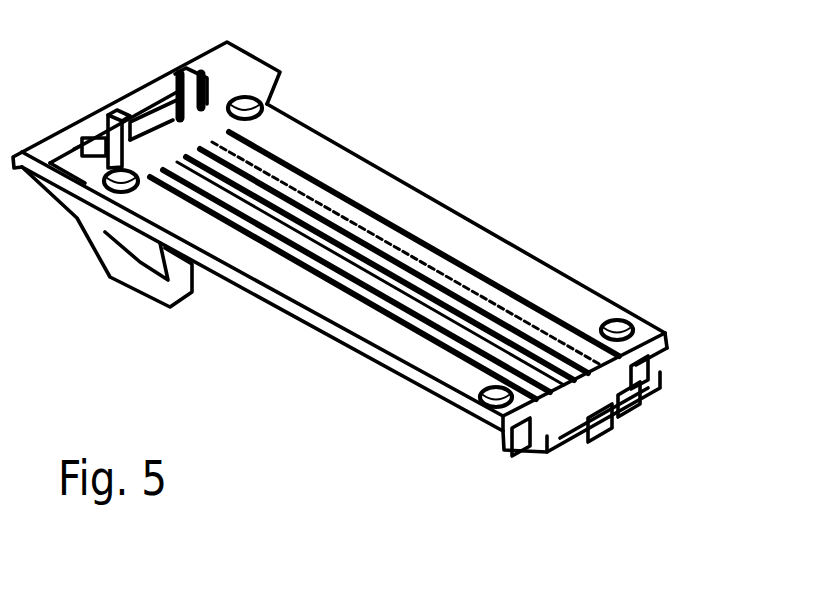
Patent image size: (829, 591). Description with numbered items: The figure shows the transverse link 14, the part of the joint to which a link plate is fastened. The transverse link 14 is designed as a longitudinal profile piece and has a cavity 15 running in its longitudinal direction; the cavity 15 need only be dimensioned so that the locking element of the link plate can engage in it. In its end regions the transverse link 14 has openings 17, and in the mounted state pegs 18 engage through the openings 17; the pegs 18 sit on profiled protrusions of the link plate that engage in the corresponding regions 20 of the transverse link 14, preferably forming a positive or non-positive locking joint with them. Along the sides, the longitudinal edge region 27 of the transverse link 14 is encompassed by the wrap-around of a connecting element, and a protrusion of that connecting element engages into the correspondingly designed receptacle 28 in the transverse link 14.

The transverse link 14 is at (363, 183).
The cavity 15 is at (570, 430).
The openings 17 is at (623, 312).
The pegs 18 is at (177, 74).
The regions 20 is at (637, 373).
The longitudinal edge region 27 is at (463, 212).
The receptacle 28 is at (628, 400).